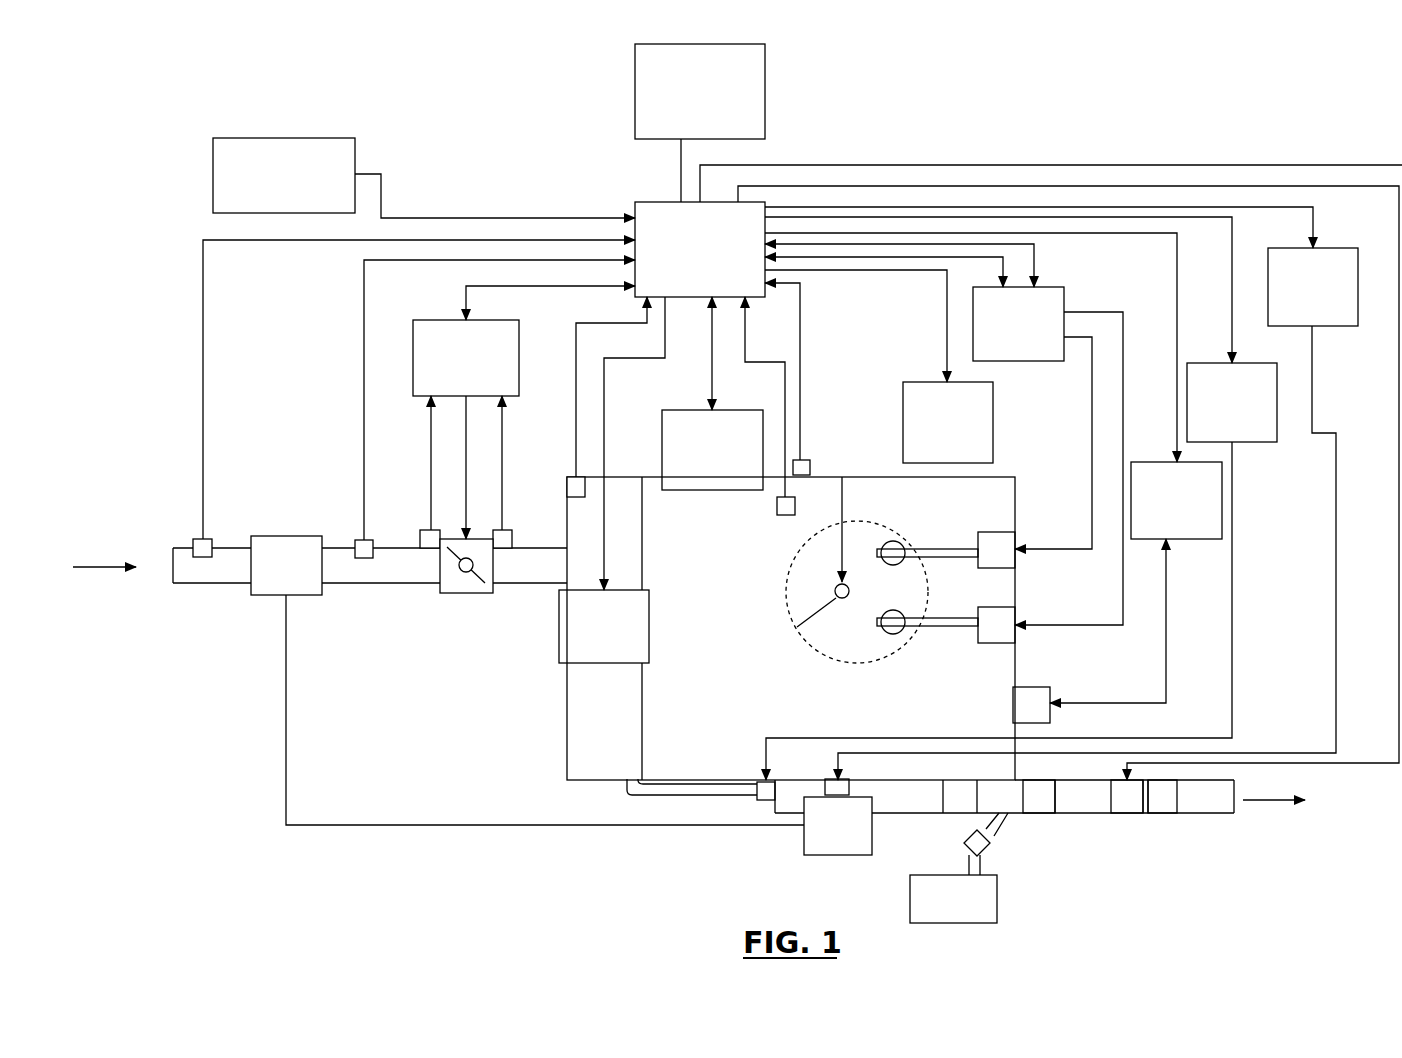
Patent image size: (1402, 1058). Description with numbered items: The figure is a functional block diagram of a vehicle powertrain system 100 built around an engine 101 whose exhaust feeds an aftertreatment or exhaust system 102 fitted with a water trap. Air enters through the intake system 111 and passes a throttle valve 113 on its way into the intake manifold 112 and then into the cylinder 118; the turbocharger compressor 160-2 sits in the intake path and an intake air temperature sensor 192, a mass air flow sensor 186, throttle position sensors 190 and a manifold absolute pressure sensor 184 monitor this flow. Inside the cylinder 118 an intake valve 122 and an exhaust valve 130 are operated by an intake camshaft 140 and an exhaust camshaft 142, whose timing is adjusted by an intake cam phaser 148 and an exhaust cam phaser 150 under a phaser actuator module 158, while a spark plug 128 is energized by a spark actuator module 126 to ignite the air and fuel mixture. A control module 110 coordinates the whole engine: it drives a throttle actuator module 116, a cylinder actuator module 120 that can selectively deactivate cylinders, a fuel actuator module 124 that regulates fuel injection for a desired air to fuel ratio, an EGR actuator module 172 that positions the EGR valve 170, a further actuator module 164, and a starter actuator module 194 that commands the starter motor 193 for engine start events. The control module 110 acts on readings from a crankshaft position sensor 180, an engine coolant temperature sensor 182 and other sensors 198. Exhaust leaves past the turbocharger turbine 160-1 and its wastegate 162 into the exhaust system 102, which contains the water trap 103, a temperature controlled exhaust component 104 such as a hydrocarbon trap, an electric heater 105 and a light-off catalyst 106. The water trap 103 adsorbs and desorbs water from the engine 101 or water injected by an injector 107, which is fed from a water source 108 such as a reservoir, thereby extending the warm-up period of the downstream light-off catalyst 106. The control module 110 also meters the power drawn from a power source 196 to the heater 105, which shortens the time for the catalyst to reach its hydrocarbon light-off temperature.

The vehicle powertrain system 100 is at (113, 100).
The engine 101 is at (1013, 492).
The exhaust system 102 is at (1218, 878).
The H2O trap 103 is at (962, 805).
The temperature controlled exhaust component 104 is at (1043, 792).
The heater 105 is at (1108, 800).
The light-off catalyst 106 is at (1177, 802).
The injector 107 is at (987, 842).
The H2O source 108 is at (997, 905).
The control module 110 is at (635, 202).
The intake system 111 is at (168, 622).
The intake manifold 112 is at (567, 700).
The throttle valve 113 is at (462, 593).
The throttle actuator module 116 is at (428, 296).
The cylinder 118 is at (787, 593).
The cylinder actuator module 120 is at (737, 410).
The intake valve 122 is at (893, 541).
The fuel actuator module 124 is at (559, 648).
The spark actuator module 126 is at (993, 422).
The spark plug 128 is at (797, 627).
The exhaust valve 130 is at (893, 634).
The intake camshaft 140 is at (945, 549).
The exhaust camshaft 142 is at (953, 626).
The intake cam phaser 148 is at (987, 532).
The exhaust cam phaser 150 is at (997, 643).
The phaser actuator module 158 is at (1064, 300).
The turbocharger turbine 160-1 is at (804, 838).
The turbocharger compressor 160-2 is at (275, 595).
The wastegate 162 is at (849, 790).
The actuator module 164 is at (1340, 326).
The EGR valve 170 is at (757, 797).
The EGR actuator module 172 is at (1258, 442).
The crankshaft position sensor 180 is at (808, 460).
The engine coolant temperature sensor 182 is at (777, 512).
The manifold absolute pressure sensor 184 is at (567, 477).
The mass air flow sensor 186 is at (355, 540).
The throttle position sensor 190 is at (430, 548).
The intake air temperature sensor 192 is at (200, 540).
The starter motor 193 is at (1050, 692).
The starter actuator module 194 is at (1180, 540).
The power source 196 is at (635, 90).
The other sensors 198 is at (213, 150).